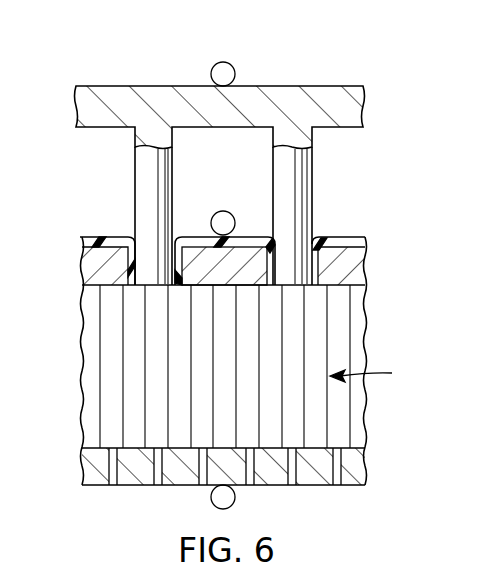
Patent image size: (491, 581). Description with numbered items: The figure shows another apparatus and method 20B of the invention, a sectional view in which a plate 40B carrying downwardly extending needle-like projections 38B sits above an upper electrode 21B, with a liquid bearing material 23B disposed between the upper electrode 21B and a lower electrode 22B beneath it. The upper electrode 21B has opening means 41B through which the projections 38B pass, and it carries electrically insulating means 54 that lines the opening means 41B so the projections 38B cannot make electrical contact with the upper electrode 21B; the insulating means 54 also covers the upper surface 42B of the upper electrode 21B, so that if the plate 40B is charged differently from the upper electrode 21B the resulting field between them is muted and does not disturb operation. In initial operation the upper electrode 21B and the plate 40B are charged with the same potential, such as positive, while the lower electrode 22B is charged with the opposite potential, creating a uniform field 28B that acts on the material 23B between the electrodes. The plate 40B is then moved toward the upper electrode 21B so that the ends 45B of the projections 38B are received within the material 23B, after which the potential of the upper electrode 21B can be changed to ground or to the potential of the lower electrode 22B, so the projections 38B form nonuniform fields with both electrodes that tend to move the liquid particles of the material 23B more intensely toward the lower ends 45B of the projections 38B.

The apparatus and method 20B is at (432, 88).
The plate 40B is at (313, 92).
The needle-like projections 38B is at (142, 190).
The upper surface 42B is at (119, 238).
The opening means 41B is at (332, 252).
The upper electrode 21B is at (355, 270).
The electrically insulating means 54 is at (322, 243).
The ends 45B is at (157, 285).
The uniform field 28B is at (388, 375).
The material 23B is at (358, 418).
The lower electrode 22B is at (358, 471).